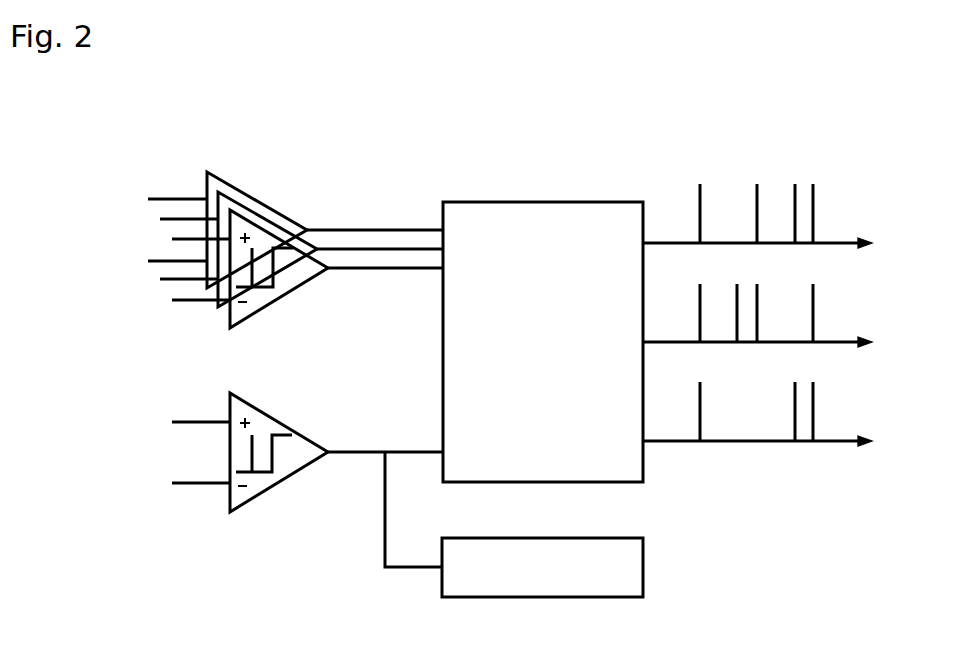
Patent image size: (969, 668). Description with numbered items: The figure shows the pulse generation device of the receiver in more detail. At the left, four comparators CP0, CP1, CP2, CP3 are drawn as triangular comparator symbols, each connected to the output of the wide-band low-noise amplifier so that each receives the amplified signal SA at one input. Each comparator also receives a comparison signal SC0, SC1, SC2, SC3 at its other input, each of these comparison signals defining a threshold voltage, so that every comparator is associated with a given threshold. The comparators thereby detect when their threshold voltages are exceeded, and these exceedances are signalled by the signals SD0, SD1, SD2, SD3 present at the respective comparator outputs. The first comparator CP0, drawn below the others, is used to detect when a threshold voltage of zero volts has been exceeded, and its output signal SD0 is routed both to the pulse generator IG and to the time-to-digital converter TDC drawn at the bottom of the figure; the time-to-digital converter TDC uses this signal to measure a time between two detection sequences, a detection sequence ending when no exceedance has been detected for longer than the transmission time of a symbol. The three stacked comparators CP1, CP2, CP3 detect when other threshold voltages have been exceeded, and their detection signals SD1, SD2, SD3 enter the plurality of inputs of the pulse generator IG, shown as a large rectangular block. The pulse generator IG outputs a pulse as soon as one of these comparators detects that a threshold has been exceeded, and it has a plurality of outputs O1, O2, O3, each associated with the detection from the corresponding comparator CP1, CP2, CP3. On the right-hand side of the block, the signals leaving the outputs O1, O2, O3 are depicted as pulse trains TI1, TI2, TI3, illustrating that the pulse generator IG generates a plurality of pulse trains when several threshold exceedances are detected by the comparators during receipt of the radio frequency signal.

The first comparator CP0 is at (298, 467).
The comparator CP1 is at (215, 168).
The comparator CP2 is at (262, 210).
The comparator CP3 is at (298, 283).
The amplified signal SA is at (172, 236).
The comparison signal SC0 is at (178, 478).
The comparison signal SC1 is at (162, 258).
The comparison signal SC2 is at (170, 277).
The comparison signal SC3 is at (173, 292).
The signal SD0 is at (405, 448).
The signal SD1 is at (328, 228).
The signal SD2 is at (412, 248).
The signal SD3 is at (385, 272).
The pulse generator IG is at (543, 342).
The time-to-digital converter TDC is at (542, 567).
The output O1 is at (734, 246).
The output O2 is at (732, 343).
The output O3 is at (732, 442).
The pulse train TI1 is at (848, 240).
The pulse train TI2 is at (848, 339).
The pulse train TI3 is at (848, 438).